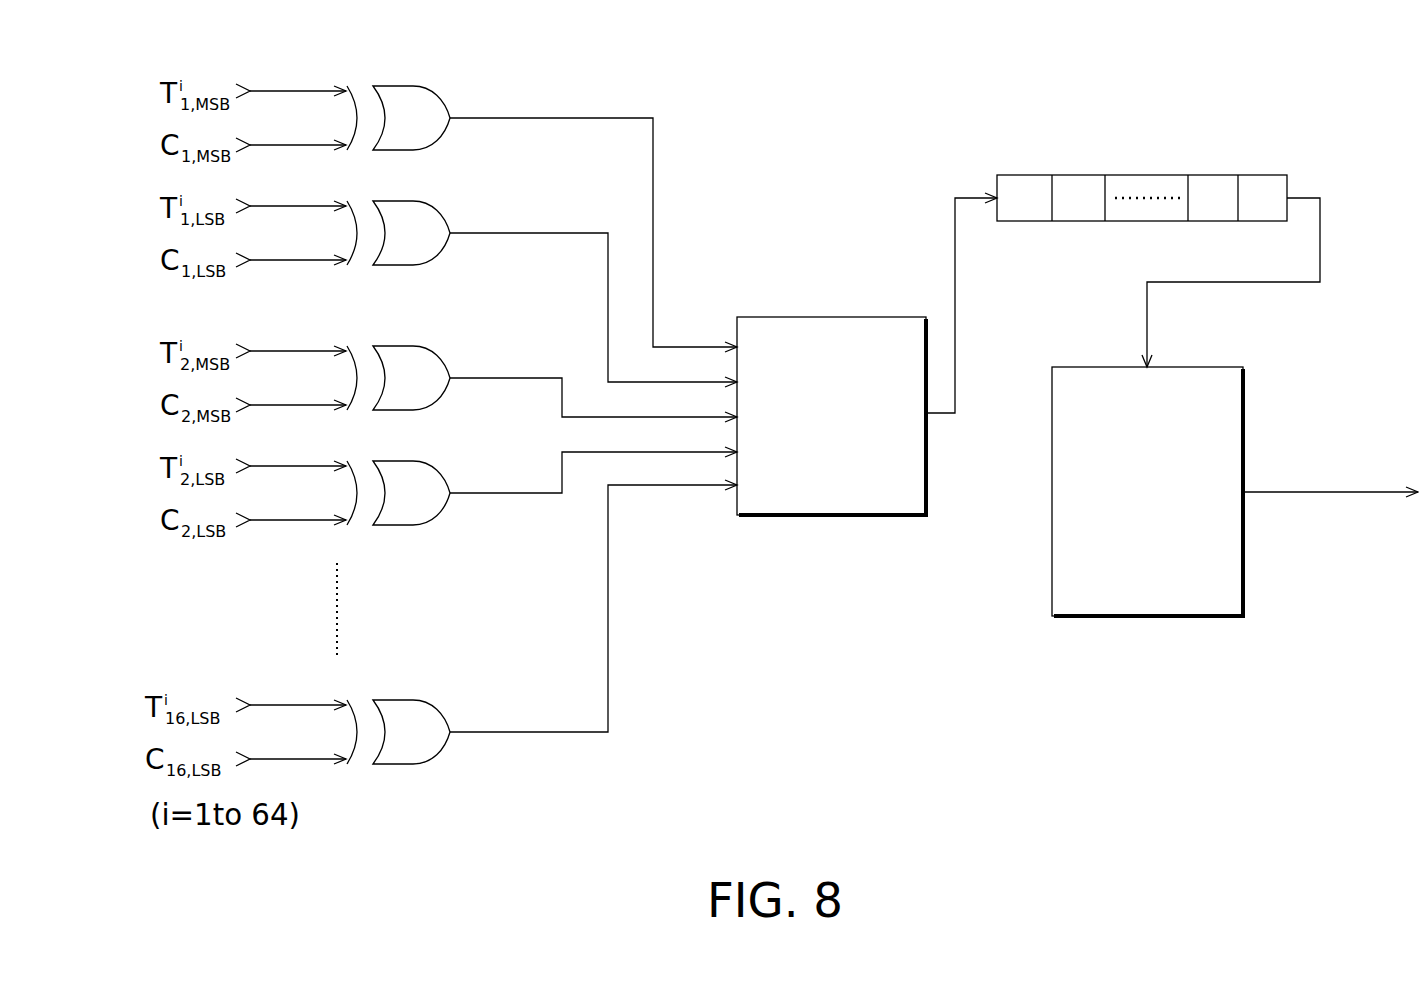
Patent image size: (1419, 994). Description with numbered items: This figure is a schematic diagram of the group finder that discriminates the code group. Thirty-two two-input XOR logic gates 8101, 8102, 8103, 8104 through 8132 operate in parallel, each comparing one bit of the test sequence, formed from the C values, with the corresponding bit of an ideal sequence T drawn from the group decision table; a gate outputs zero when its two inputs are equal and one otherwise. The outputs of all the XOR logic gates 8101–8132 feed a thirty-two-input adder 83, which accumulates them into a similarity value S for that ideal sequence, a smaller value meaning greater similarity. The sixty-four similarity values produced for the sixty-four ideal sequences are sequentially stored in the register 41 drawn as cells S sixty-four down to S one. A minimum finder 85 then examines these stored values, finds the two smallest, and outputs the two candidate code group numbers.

The 2-input XOR logic gate 8101 is at (437, 94).
The 2-input XOR logic gate 8102 is at (437, 209).
The 2-input XOR logic gate 8103 is at (437, 354).
The 2-input XOR logic gate 8104 is at (437, 469).
The 2-input XOR logic gate 8132 is at (437, 708).
The 32-input adder 83 is at (777, 317).
The register storing distances S1 to S64 41 is at (1225, 175).
The minimum finder 85 is at (1205, 367).